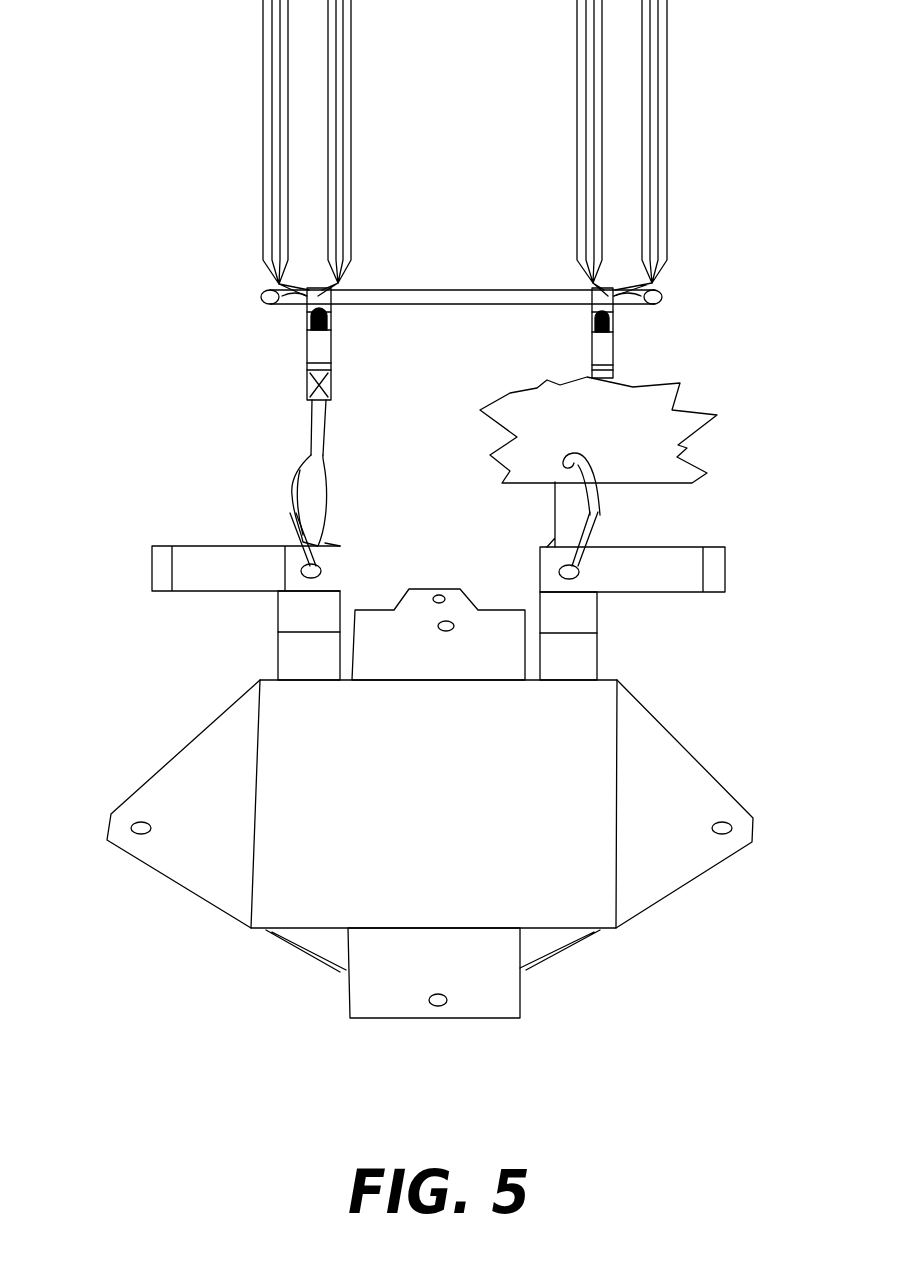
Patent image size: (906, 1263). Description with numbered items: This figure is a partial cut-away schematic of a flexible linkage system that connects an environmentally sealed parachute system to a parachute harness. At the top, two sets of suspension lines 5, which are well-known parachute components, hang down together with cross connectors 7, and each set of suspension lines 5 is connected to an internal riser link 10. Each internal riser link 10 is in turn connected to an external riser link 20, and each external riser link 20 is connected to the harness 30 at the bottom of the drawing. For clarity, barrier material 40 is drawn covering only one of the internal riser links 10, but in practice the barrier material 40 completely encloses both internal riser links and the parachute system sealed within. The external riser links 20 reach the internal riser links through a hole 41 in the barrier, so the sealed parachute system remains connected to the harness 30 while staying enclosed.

The suspension lines 5 is at (362, 85).
The cross connectors 7 is at (477, 295).
The internal riser link 10 is at (557, 353).
The external riser link 20 is at (672, 517).
The harness 30 is at (142, 740).
The barrier material 40 is at (700, 387).
The hole 41 is at (615, 465).